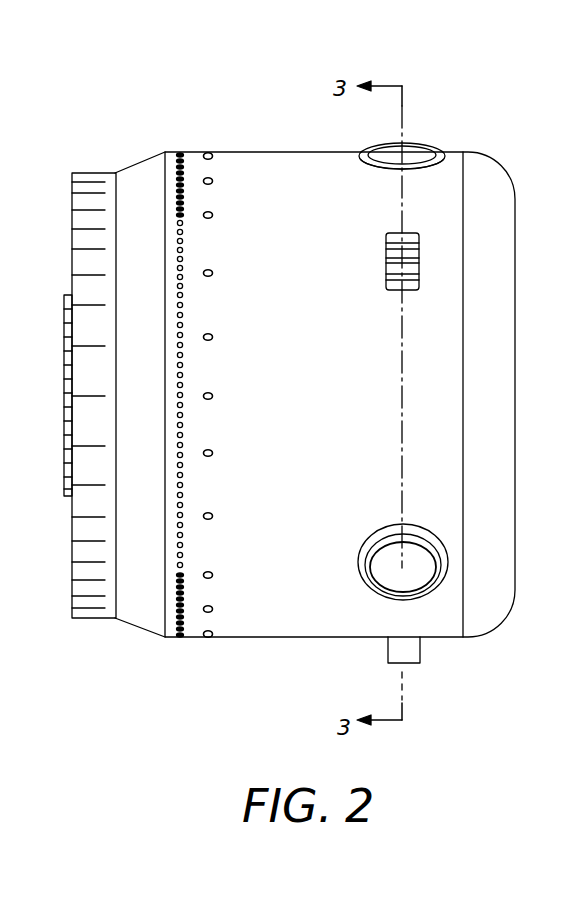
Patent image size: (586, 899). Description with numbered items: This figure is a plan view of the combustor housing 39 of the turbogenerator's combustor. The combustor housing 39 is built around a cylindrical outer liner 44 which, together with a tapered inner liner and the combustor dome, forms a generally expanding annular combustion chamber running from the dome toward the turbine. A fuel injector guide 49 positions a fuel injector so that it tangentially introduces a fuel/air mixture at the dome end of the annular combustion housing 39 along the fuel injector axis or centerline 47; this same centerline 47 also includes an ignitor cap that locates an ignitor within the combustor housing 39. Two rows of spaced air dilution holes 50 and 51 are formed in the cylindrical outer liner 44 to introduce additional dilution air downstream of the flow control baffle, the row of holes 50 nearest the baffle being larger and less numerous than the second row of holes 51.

The combustor housing 39 is at (483, 124).
The cylindrical outer liner 44 is at (248, 152).
The fuel injector axis or centerline 47 is at (403, 373).
The fuel injector guide 49 is at (448, 568).
The air dilution holes 50 is at (213, 396).
The air dilution holes 51 is at (183, 188).